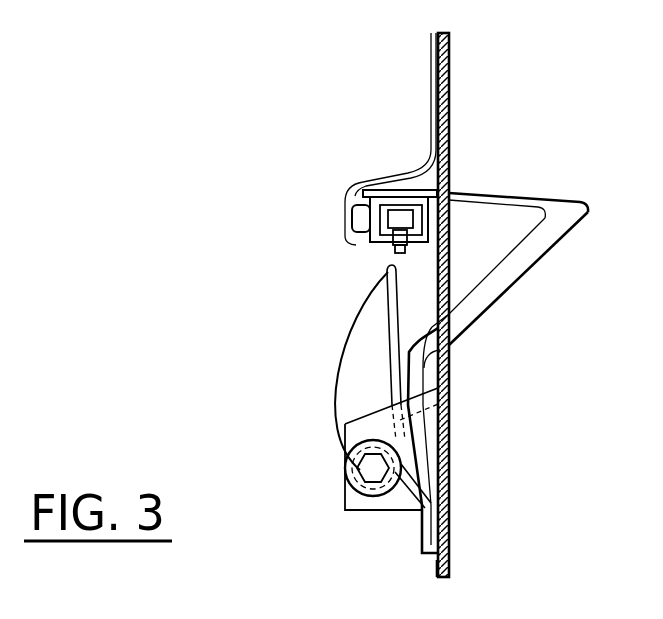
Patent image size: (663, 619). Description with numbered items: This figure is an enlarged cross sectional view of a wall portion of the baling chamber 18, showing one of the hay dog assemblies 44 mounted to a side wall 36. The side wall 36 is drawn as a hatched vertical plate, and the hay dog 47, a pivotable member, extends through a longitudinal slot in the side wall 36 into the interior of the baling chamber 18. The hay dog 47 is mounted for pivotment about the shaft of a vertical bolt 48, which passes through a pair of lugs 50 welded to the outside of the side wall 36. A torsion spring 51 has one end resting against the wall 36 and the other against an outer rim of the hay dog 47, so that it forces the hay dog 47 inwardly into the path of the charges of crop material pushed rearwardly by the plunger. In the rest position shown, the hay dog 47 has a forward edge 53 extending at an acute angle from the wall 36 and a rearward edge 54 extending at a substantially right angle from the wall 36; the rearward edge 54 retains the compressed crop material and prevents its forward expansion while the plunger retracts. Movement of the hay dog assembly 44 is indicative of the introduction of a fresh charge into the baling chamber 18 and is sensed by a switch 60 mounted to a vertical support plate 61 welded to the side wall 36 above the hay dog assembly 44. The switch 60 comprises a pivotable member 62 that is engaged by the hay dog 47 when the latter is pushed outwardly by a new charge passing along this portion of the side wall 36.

The baling chamber 18 is at (560, 487).
The side wall 36 is at (434, 567).
The hay dog assembly 44 is at (264, 383).
The hay dog 47 is at (538, 248).
The vertical bolt 48 is at (365, 468).
The lugs 50 is at (350, 510).
The torsion spring 51 is at (385, 274).
The forward edge 53 is at (487, 318).
The rearward edge 54 is at (470, 195).
The switch 60 is at (376, 241).
The vertical support plate 61 is at (373, 188).
The pivotable member 62 is at (352, 216).